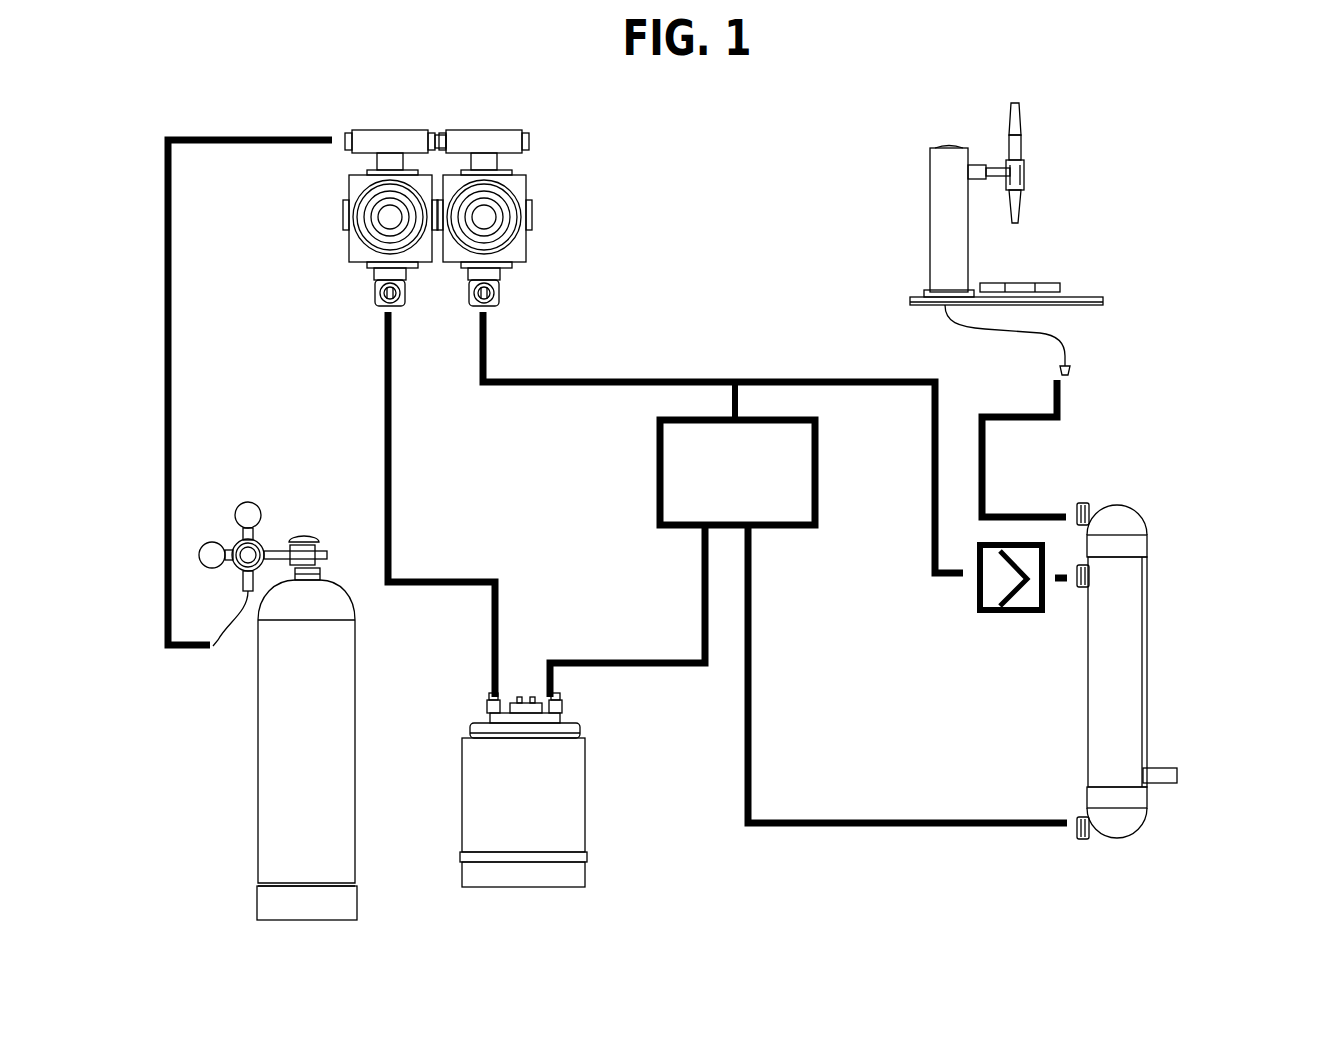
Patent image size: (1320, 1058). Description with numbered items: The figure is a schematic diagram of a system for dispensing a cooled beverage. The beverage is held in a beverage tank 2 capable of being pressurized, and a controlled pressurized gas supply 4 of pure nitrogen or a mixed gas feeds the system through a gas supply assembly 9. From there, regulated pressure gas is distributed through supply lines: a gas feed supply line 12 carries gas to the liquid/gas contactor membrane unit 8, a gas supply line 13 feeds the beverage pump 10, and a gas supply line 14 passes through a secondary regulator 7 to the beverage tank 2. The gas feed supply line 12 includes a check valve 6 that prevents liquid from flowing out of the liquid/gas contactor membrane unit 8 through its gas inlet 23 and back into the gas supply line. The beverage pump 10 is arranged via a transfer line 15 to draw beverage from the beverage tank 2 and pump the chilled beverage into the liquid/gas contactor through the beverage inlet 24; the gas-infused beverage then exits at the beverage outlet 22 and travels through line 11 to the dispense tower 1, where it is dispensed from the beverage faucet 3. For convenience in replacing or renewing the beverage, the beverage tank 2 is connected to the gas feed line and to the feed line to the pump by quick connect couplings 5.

The dispense tower 1 is at (926, 188).
The beverage tank 2 is at (597, 816).
The beverage faucet 3 is at (1035, 168).
The controlled pressurized gas supply 4 is at (257, 778).
The quick connect couplings 5 is at (487, 700).
The check valve 6 is at (1008, 614).
The secondary regulator 7 is at (347, 238).
The liquid/gas contactor membrane unit 8 is at (1152, 680).
The gas supply assembly 9 is at (266, 503).
The beverage pump 10 is at (737, 472).
The line to tower assembly 11 is at (988, 460).
The gas feed supply line to liquid/gas contactor membrane unit 12 is at (798, 378).
The gas supply line to beverage pump 13 is at (730, 405).
The gas supply line to beverage tank 14 is at (393, 553).
The transfer line 15 is at (641, 669).
The beverage outlet 22 is at (1098, 500).
The gas inlet 23 is at (1074, 588).
The beverage inlet 24 is at (1076, 843).